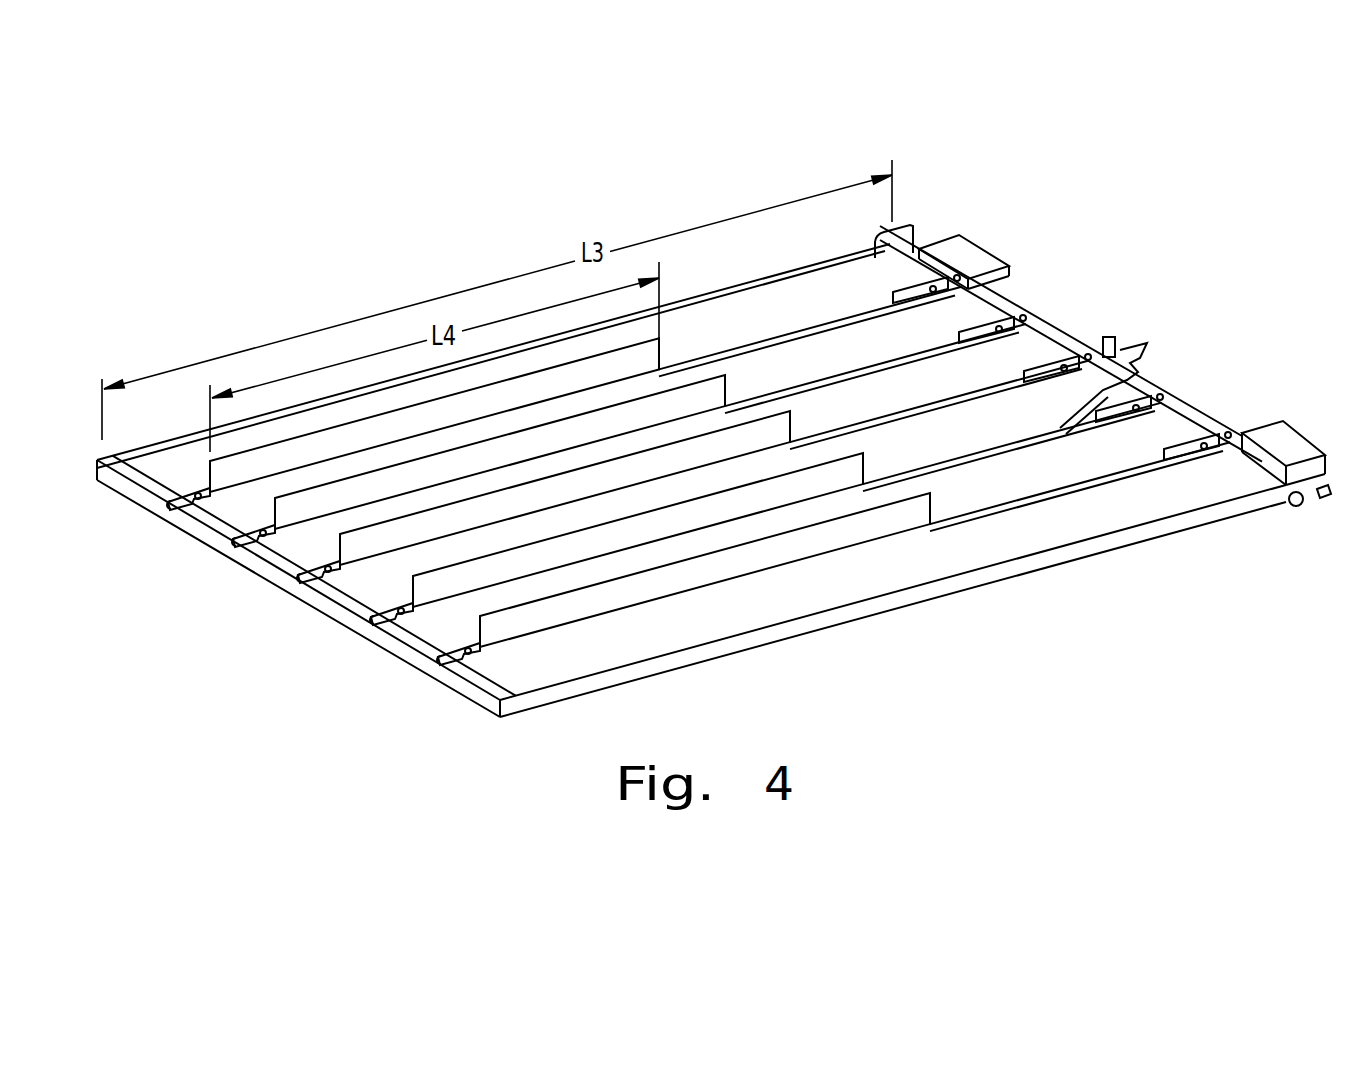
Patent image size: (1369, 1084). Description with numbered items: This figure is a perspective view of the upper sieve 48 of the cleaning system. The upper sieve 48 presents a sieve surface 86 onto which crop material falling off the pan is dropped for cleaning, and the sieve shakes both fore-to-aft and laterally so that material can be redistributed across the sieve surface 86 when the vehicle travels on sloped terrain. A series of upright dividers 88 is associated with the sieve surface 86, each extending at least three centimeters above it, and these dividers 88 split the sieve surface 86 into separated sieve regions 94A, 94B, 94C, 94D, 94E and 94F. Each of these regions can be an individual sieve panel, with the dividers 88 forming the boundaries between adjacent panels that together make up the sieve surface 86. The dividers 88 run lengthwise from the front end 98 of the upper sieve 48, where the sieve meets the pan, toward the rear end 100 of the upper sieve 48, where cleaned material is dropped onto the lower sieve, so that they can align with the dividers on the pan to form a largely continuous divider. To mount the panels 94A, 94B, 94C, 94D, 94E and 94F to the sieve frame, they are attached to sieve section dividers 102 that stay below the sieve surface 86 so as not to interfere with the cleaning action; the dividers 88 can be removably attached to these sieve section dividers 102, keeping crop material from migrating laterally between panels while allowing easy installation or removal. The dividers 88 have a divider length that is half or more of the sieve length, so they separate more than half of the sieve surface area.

The upper sieve 48 is at (1097, 303).
The sieve surface 86 is at (963, 367).
The dividers 88 is at (677, 397).
The sieve region 94A is at (642, 648).
The sieve region 94B is at (466, 612).
The sieve region 94C is at (390, 578).
The sieve region 94D is at (312, 537).
The sieve region 94E is at (262, 492).
The louver panel 94F is at (193, 462).
The front end 98 is at (483, 687).
The rear end 100 is at (1200, 413).
The sieve section dividers 102 is at (1127, 467).